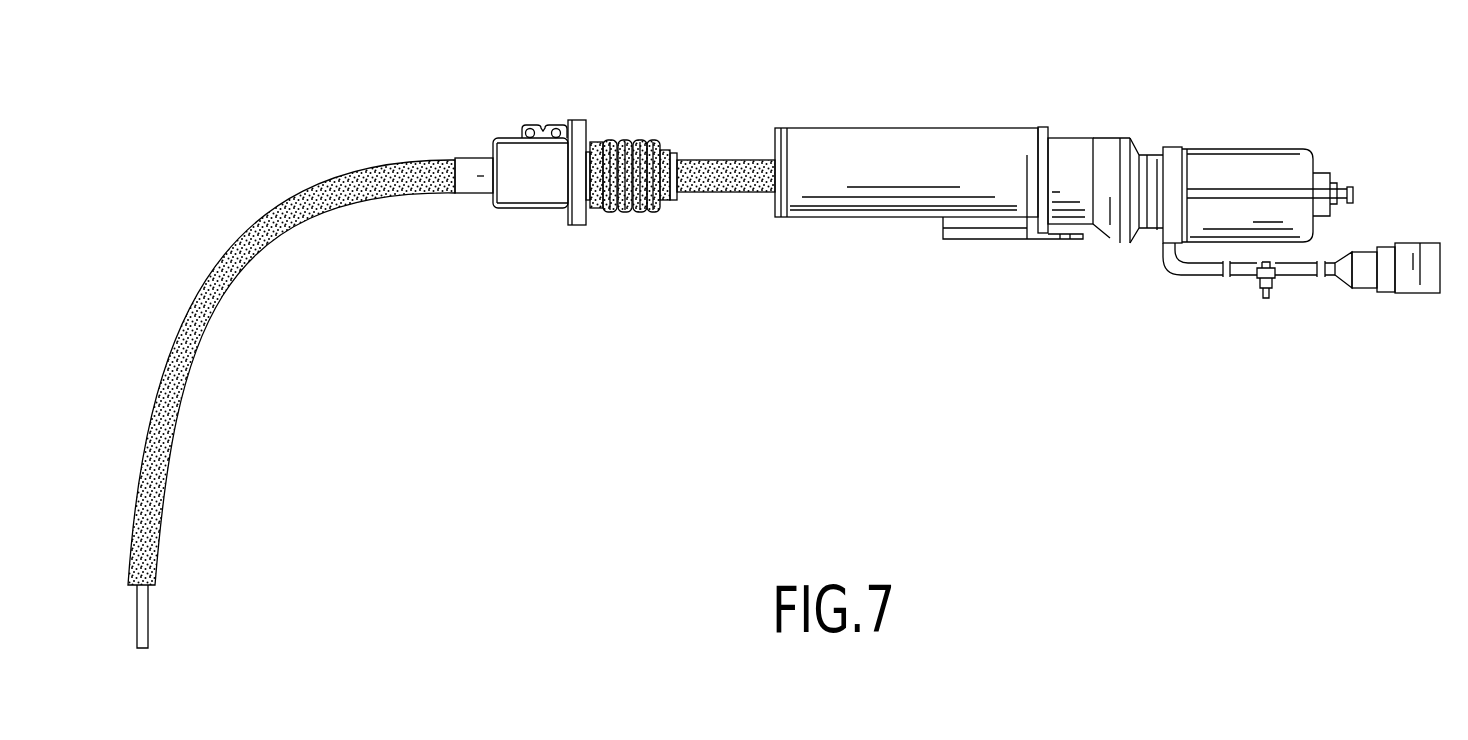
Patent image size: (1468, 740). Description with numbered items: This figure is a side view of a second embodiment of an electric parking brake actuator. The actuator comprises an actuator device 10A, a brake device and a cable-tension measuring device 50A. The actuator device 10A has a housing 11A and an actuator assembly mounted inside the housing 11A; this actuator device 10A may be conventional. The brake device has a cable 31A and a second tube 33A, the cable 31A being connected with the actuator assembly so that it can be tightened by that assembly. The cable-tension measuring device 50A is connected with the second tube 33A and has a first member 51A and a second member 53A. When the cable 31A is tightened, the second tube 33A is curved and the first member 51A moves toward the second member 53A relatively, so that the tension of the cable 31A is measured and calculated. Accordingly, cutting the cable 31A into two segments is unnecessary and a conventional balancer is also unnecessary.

The actuator device 10A is at (1096, 153).
The housing 11A is at (833, 135).
The second tube 33A is at (303, 190).
The cable 31A is at (145, 612).
The cable-tension measuring device 50A is at (600, 187).
The second member 53A is at (508, 143).
The first member 51A is at (678, 196).